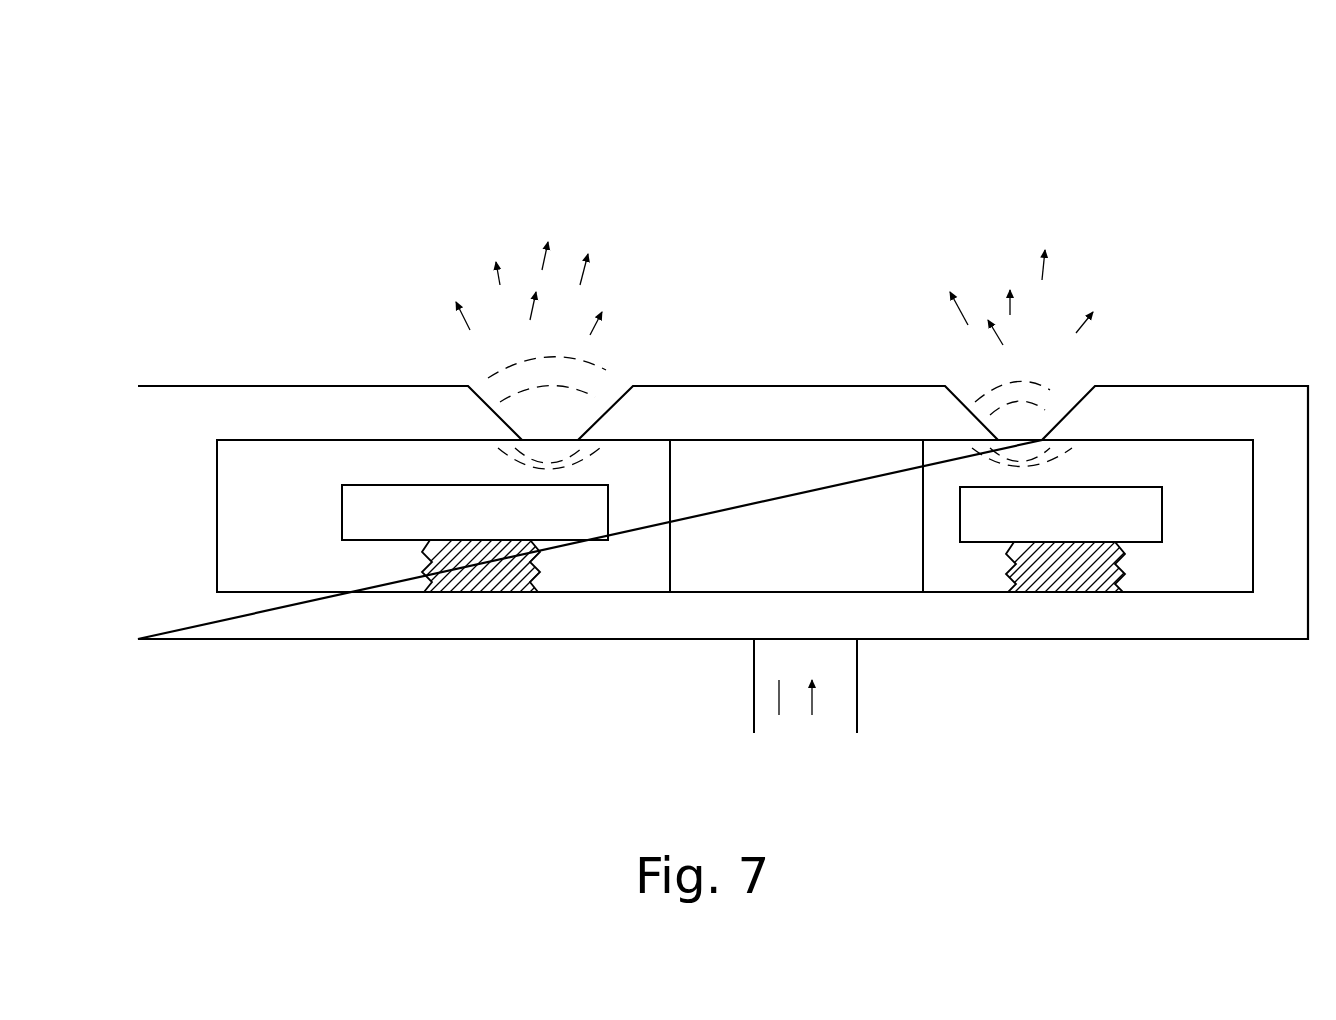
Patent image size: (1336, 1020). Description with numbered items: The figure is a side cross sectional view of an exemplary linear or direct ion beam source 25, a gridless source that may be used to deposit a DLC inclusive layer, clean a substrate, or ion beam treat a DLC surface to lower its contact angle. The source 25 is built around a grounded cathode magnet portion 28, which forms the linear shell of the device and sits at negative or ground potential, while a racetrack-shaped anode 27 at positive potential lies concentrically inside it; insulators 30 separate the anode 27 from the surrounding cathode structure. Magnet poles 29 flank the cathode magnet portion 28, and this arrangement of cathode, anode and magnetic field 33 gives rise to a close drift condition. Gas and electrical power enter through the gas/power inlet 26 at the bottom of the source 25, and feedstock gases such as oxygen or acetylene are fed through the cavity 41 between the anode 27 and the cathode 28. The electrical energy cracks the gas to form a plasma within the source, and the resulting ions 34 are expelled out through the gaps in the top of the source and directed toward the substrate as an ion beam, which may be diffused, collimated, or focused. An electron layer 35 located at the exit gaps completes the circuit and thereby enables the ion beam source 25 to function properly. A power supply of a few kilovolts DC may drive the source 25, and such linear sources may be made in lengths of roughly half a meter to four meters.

The linear ion beam source 25 is at (820, 208).
The gas/power inlet 26 is at (754, 670).
The racetrack-shaped anode 27 is at (352, 508).
The grounded cathode magnet portion 28 is at (891, 468).
The magnet poles 29 is at (290, 400).
The insulators 30 is at (487, 560).
The magnetic field 33 is at (596, 401).
The ions 34 is at (462, 320).
The electron layer 35 is at (560, 432).
The cavity 41 is at (955, 577).